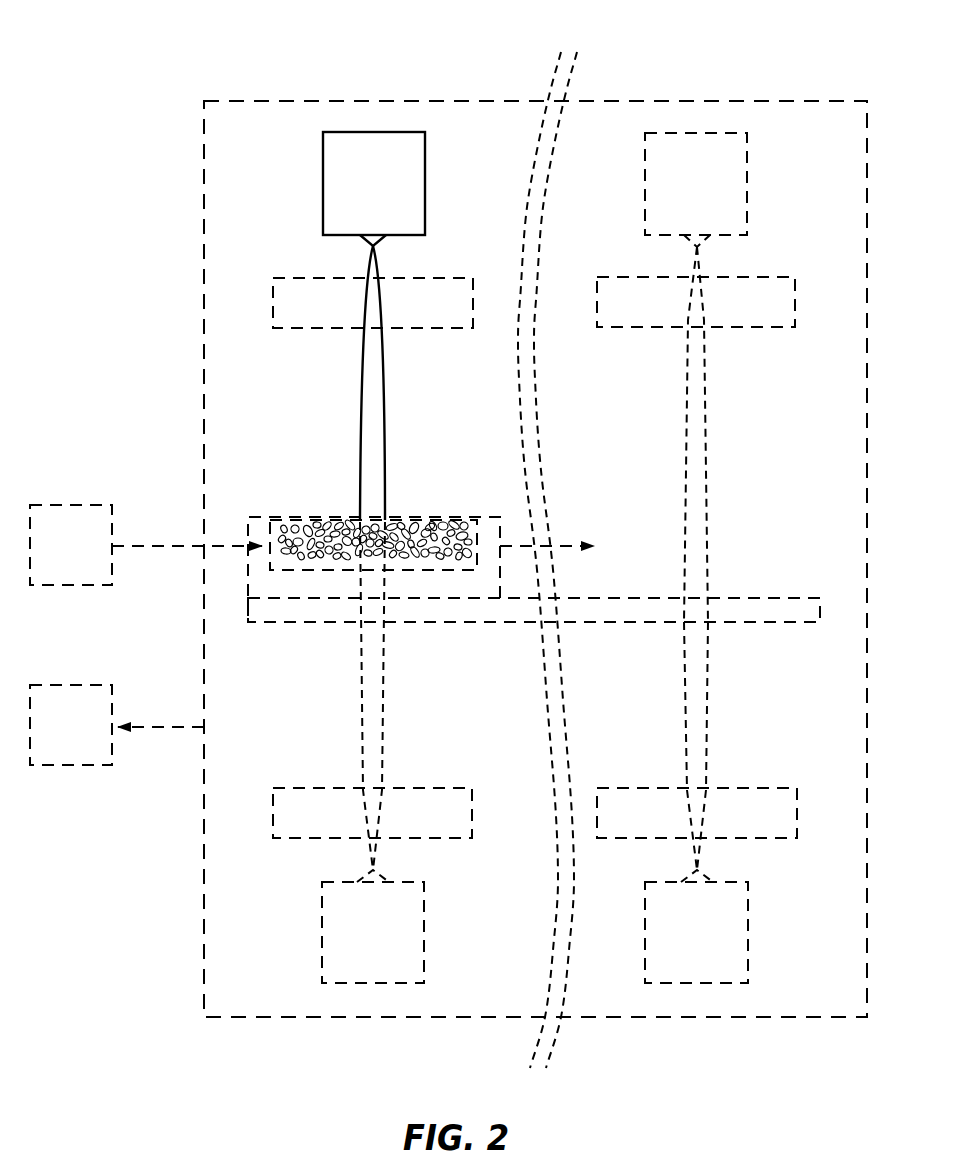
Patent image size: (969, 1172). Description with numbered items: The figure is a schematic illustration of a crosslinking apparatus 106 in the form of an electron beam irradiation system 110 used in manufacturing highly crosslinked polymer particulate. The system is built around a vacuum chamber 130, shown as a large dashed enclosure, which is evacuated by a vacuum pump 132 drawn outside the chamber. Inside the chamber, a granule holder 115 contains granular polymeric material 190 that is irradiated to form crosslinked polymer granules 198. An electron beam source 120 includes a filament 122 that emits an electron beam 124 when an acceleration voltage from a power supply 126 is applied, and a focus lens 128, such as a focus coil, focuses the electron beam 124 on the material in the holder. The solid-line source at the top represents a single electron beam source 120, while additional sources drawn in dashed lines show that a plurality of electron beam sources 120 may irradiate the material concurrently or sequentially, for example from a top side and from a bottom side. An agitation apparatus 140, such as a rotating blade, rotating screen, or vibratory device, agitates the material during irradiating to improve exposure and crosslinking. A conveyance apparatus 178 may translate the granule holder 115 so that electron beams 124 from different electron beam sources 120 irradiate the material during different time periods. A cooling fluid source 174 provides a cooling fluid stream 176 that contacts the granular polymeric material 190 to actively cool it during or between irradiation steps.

The crosslinking apparatus 106 is at (136, 38).
The electron beam irradiation system 110 is at (453, 527).
The granule holder 115 is at (357, 567).
The electron beam source 120 is at (536, 553).
The filament 122 is at (380, 244).
The electron beam 124 is at (360, 398).
The power supply 126 is at (330, 198).
The focus lens 128 is at (273, 296).
The vacuum chamber 130 is at (204, 160).
The vacuum pump 132 is at (66, 685).
The agitation apparatus 140 is at (432, 572).
The cooling fluid source 174 is at (66, 505).
The cooling fluid stream 176 is at (147, 546).
The conveyance apparatus 178 is at (262, 623).
The granular polymeric material 190 is at (300, 519).
The crosslinked polymer granules 198 is at (432, 521).